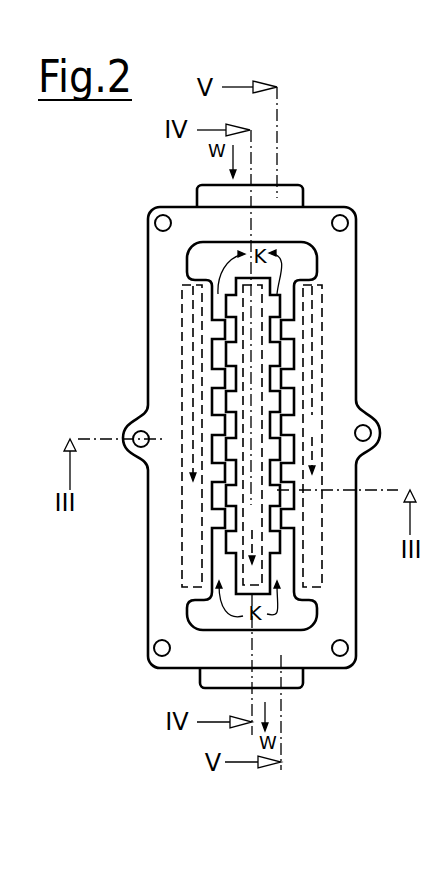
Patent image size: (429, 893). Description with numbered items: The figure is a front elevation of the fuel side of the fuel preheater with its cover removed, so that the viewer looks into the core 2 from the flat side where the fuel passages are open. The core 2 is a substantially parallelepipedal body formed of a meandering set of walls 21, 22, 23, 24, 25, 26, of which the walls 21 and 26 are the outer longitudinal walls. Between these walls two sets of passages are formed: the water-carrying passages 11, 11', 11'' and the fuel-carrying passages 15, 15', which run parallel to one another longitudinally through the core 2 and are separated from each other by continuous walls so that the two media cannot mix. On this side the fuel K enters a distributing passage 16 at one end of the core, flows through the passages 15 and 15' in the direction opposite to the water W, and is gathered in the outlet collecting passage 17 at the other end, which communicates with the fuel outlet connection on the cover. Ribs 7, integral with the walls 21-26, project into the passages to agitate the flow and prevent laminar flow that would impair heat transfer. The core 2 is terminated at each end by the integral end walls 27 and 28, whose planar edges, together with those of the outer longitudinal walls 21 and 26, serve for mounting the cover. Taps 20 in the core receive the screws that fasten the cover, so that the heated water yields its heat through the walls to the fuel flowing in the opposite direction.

The core 2 is at (155, 196).
The ribs 7 is at (224, 466).
The passage 11 is at (150, 418).
The passage 11' is at (181, 434).
The passage 11'' is at (211, 436).
The passage 15 is at (342, 358).
The passage 15' is at (348, 385).
The distributing passage 16 is at (318, 606).
The outlet collecting passage 17 is at (300, 262).
The taps 20 is at (156, 222).
The outer longitudinal wall 21 is at (170, 484).
The wall 22 is at (210, 505).
The wall 23 is at (236, 527).
The wall 24 is at (272, 541).
The wall 25 is at (292, 558).
The outer longitudinal wall 26 is at (337, 563).
The end wall 27 is at (290, 217).
The end wall 28 is at (297, 650).